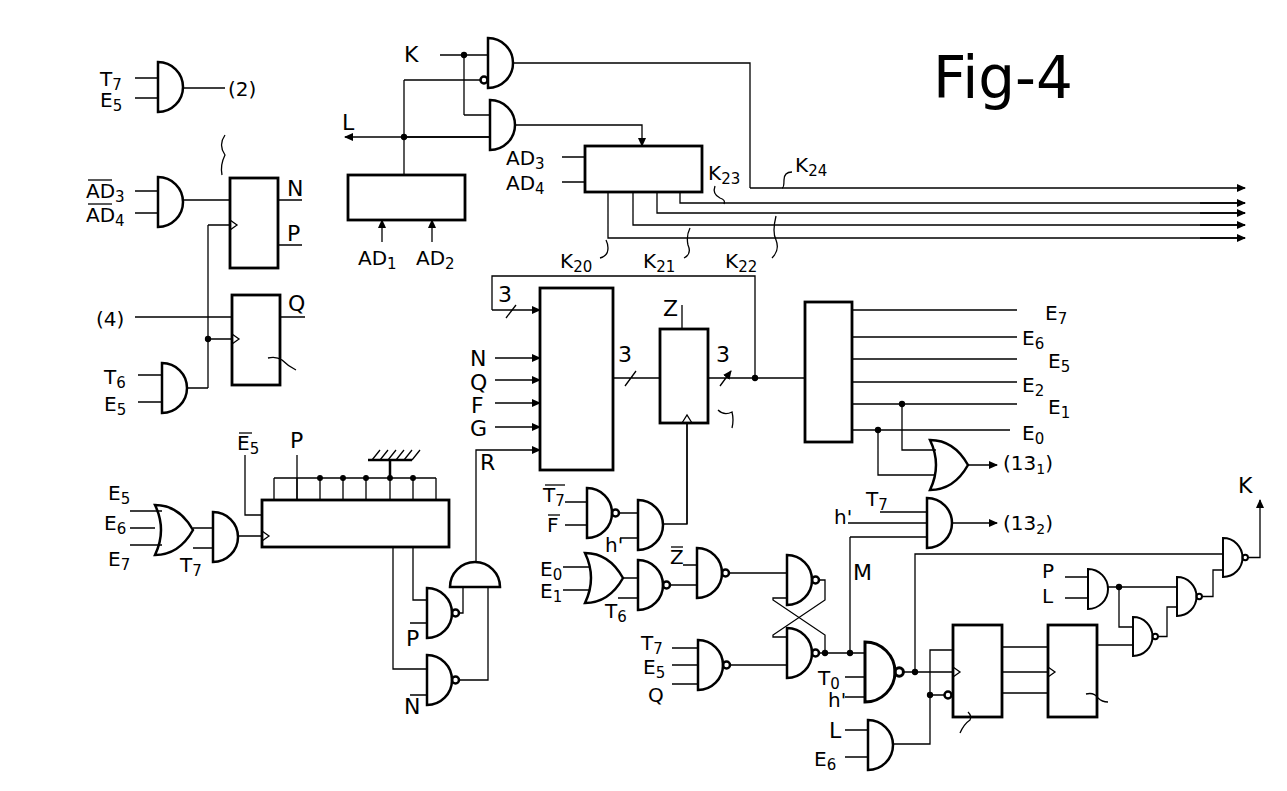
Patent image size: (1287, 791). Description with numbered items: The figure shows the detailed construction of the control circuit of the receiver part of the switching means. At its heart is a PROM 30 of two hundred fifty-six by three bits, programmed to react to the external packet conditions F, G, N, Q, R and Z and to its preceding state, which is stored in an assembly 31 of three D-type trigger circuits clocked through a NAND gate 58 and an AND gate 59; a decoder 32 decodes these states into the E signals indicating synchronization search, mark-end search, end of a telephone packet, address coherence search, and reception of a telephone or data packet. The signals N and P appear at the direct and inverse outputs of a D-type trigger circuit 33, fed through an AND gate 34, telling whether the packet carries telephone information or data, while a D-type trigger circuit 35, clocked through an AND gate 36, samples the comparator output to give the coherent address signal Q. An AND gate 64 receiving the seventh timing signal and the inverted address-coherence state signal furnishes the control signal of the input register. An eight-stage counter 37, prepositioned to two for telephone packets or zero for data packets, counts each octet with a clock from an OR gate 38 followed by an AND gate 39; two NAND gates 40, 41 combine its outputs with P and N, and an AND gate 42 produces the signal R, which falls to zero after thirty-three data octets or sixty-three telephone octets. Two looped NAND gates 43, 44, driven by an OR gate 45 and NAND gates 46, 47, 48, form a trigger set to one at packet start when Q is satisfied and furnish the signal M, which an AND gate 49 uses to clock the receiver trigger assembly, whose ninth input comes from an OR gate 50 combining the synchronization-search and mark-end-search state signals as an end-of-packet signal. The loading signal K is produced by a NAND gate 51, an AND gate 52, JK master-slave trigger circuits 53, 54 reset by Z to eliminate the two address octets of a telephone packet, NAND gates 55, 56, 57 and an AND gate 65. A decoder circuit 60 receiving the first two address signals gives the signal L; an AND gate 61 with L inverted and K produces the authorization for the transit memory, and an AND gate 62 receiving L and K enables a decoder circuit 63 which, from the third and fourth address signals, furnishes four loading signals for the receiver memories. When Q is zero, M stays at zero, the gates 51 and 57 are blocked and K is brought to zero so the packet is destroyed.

The PROM 30 is at (620, 314).
The assembly of three D-type trigger circuits 31 is at (716, 329).
The decoder 32 is at (832, 302).
The D-type trigger circuit 33 is at (246, 178).
The AND gate 34 is at (180, 186).
The D-type trigger circuit 35 is at (246, 385).
The AND gate 36 is at (180, 410).
The eight-stage counter 37 is at (346, 547).
The OR gate 38 is at (162, 508).
The AND gate 39 is at (228, 556).
The NAND gate 40 is at (436, 588).
The NAND gate 41 is at (450, 662).
The AND gate 42 is at (504, 570).
The NAND gate 43 is at (816, 574).
The NAND gate 44 is at (814, 678).
The OR gate 45 is at (598, 600).
The NAND gate 46 is at (662, 608).
The NAND gate 47 is at (712, 532).
The NAND gate 48 is at (712, 692).
The AND gate 49 is at (946, 534).
The OR gate 50 is at (942, 484).
The NAND gate 51 is at (874, 622).
The AND gate 52 is at (886, 710).
The JK type trigger circuit 53 is at (980, 625).
The JK type trigger circuit 54 is at (1042, 625).
The NAND gate 55 is at (1142, 652).
The NAND gate 56 is at (1188, 612).
The NAND gate 57 is at (1242, 570).
The NAND gate 58 is at (598, 478).
The AND gate 59 is at (654, 478).
The decoder circuit 60 is at (446, 175).
The AND gate 61 is at (515, 30).
The AND gate 62 is at (518, 96).
The decoder circuit 63 is at (682, 146).
The AND gate 64 is at (176, 72).
The AND gate 65 is at (1104, 560).